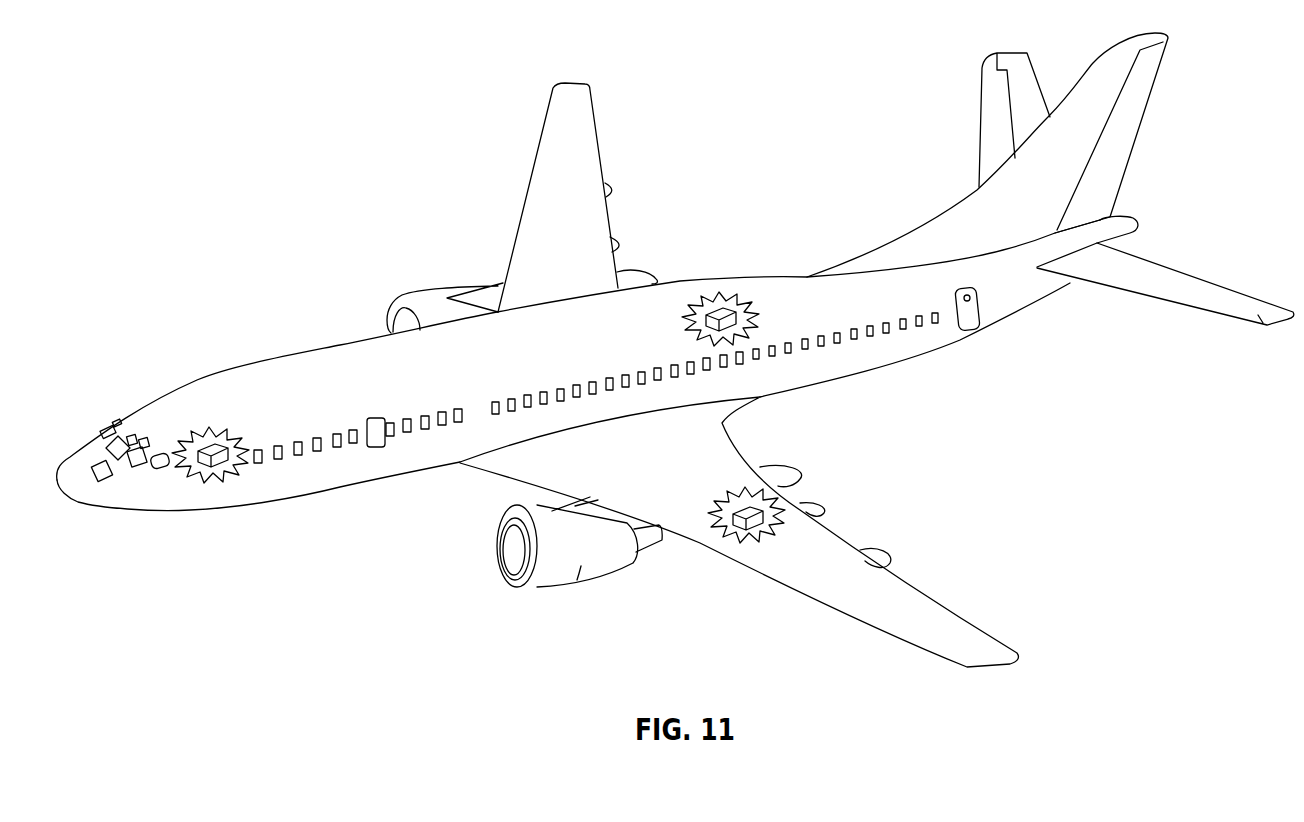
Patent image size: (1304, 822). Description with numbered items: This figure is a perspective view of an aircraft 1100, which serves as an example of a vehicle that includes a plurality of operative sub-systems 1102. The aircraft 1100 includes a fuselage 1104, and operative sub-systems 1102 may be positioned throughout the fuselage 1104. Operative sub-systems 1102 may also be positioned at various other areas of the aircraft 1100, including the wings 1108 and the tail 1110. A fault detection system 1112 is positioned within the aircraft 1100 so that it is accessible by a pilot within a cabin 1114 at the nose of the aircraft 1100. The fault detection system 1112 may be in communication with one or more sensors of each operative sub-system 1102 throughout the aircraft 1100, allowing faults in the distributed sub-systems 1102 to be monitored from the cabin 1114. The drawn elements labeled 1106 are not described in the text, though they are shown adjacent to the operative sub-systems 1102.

The aircraft 1100 is at (178, 231).
The operative sub-systems 1102 is at (213, 443).
The fuselage 1104 is at (285, 492).
The sensor unit 1106 is at (221, 461).
The wings 1108 is at (578, 122).
The tail 1110 is at (1098, 222).
The fault detection system 1112 is at (100, 463).
The cabin 1114 is at (147, 463).